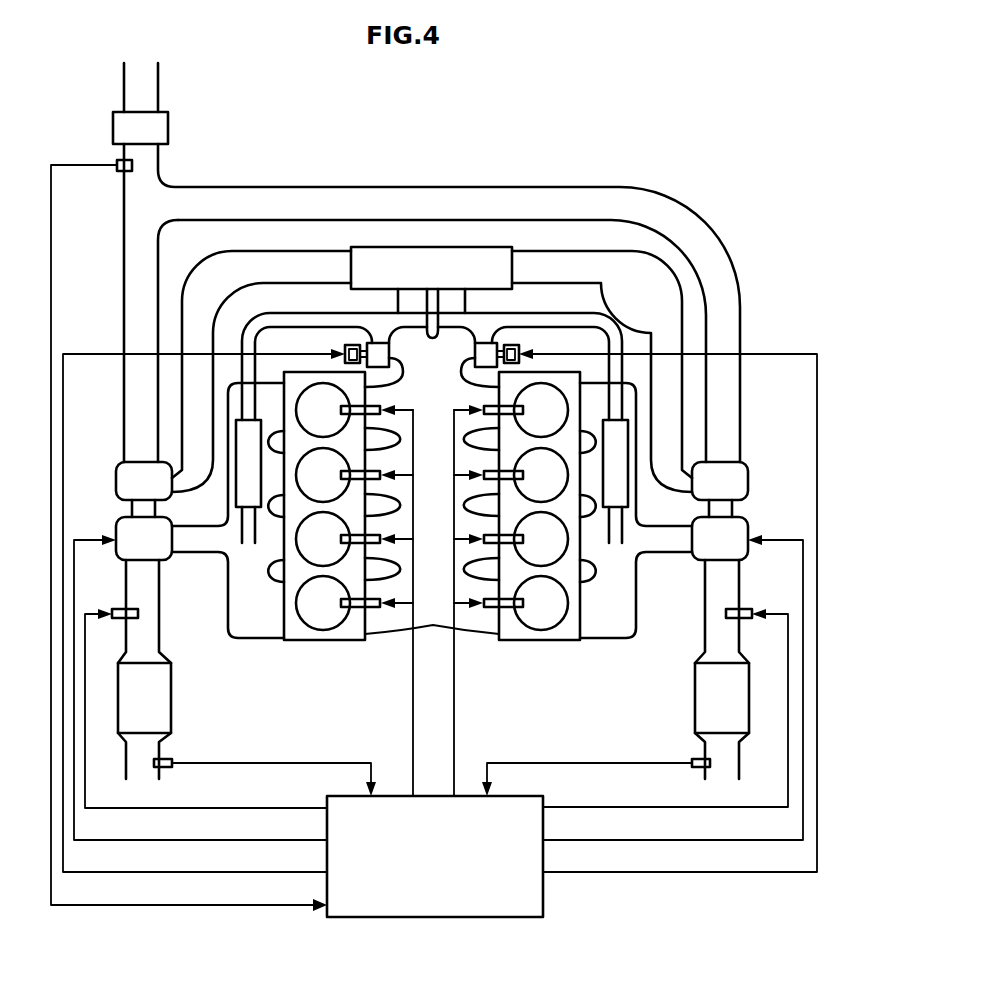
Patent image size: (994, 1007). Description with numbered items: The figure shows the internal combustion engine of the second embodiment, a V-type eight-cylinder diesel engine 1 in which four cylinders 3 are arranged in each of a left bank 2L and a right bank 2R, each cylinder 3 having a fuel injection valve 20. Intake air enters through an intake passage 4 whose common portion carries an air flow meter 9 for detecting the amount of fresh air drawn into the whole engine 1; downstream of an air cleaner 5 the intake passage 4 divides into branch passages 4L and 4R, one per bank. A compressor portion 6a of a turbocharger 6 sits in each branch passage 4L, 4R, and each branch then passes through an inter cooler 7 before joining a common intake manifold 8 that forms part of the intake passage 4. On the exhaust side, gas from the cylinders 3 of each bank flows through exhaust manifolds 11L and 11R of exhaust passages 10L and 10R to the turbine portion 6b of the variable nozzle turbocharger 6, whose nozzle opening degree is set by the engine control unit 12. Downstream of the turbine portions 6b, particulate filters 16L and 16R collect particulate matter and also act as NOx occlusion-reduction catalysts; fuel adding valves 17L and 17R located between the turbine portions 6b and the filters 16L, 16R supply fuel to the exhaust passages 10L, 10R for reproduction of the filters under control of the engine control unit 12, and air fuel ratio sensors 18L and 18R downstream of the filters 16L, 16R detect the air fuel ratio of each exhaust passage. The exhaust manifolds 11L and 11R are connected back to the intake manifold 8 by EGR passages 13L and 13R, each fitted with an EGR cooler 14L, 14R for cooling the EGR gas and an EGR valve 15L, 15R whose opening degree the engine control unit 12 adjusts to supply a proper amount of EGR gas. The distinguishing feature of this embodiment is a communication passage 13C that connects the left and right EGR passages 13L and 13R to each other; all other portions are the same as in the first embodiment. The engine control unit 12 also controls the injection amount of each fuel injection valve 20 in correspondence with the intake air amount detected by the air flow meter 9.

The diesel engine 1 is at (518, 134).
The left bank 2L is at (320, 642).
The right bank 2R is at (544, 642).
The cylinder 3 is at (333, 613).
The intake passage 4 is at (158, 95).
The left branch passage 4L is at (142, 322).
The right branch passage 4R is at (437, 200).
The air cleaner 5 is at (168, 124).
The turbocharger 6 is at (125, 517).
The compressor portion 6a is at (128, 473).
The turbine portion 6b is at (162, 550).
The inter cooler 7 is at (398, 247).
The intake manifold 8 is at (418, 633).
The air flow meter 9 is at (120, 160).
The left exhaust passage 10L is at (163, 650).
The right exhaust passage 10R is at (701, 650).
The left exhaust manifold 11L is at (250, 612).
The right exhaust manifold 11R is at (614, 612).
The engine control unit 12 is at (500, 917).
The communication passage 13C is at (427, 312).
The left EGR passage 13L is at (252, 327).
The right EGR passage 13R is at (612, 323).
The left EGR cooler 14L is at (236, 462).
The right EGR cooler 14R is at (628, 462).
The left EGR valve 15L is at (375, 343).
The right EGR valve 15R is at (489, 343).
The left particulate filter 16L is at (165, 685).
The right particulate filter 16R is at (707, 688).
The left fuel adding valve 17L is at (122, 609).
The right fuel adding valve 17R is at (742, 609).
The left air fuel ratio sensor 18L is at (162, 767).
The right air fuel ratio sensor 18R is at (702, 767).
The fuel injection valve 20 is at (372, 613).